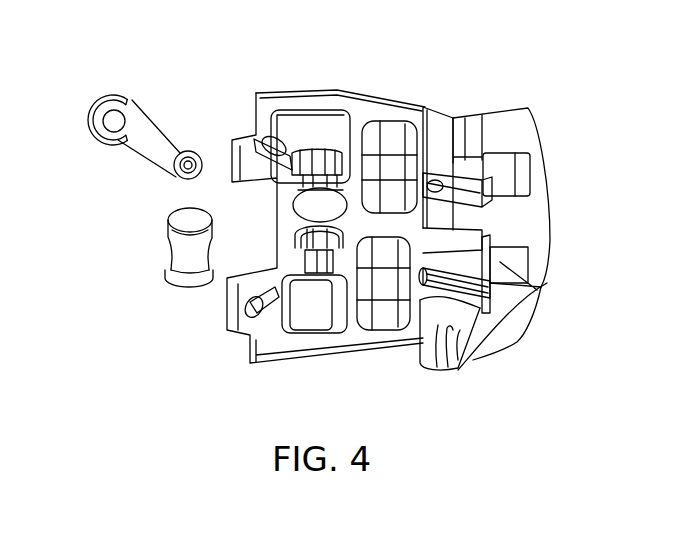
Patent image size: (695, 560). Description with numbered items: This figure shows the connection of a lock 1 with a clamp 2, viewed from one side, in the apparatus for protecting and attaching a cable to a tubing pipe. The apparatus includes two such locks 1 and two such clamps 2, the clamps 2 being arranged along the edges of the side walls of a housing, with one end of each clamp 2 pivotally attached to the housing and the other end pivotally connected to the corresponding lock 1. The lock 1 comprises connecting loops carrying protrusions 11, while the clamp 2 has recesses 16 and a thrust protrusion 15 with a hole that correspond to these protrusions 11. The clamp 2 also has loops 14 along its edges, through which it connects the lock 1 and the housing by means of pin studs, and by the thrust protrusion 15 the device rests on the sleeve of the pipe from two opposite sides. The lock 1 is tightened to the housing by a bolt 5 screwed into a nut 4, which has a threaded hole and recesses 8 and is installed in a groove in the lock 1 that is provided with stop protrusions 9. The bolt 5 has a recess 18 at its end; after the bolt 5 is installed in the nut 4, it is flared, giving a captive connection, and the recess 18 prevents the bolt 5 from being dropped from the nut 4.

The lock 1 is at (366, 116).
The clamp 2 is at (525, 127).
The nut 4 is at (326, 213).
The bolt 5 is at (121, 128).
The recesses 8 is at (227, 257).
The stop protrusions 9 is at (350, 287).
The protrusions 11 is at (428, 160).
The loops 14 is at (443, 230).
The thrust protrusion 15 is at (437, 373).
The recesses 16 is at (490, 245).
The recess 18 is at (173, 170).